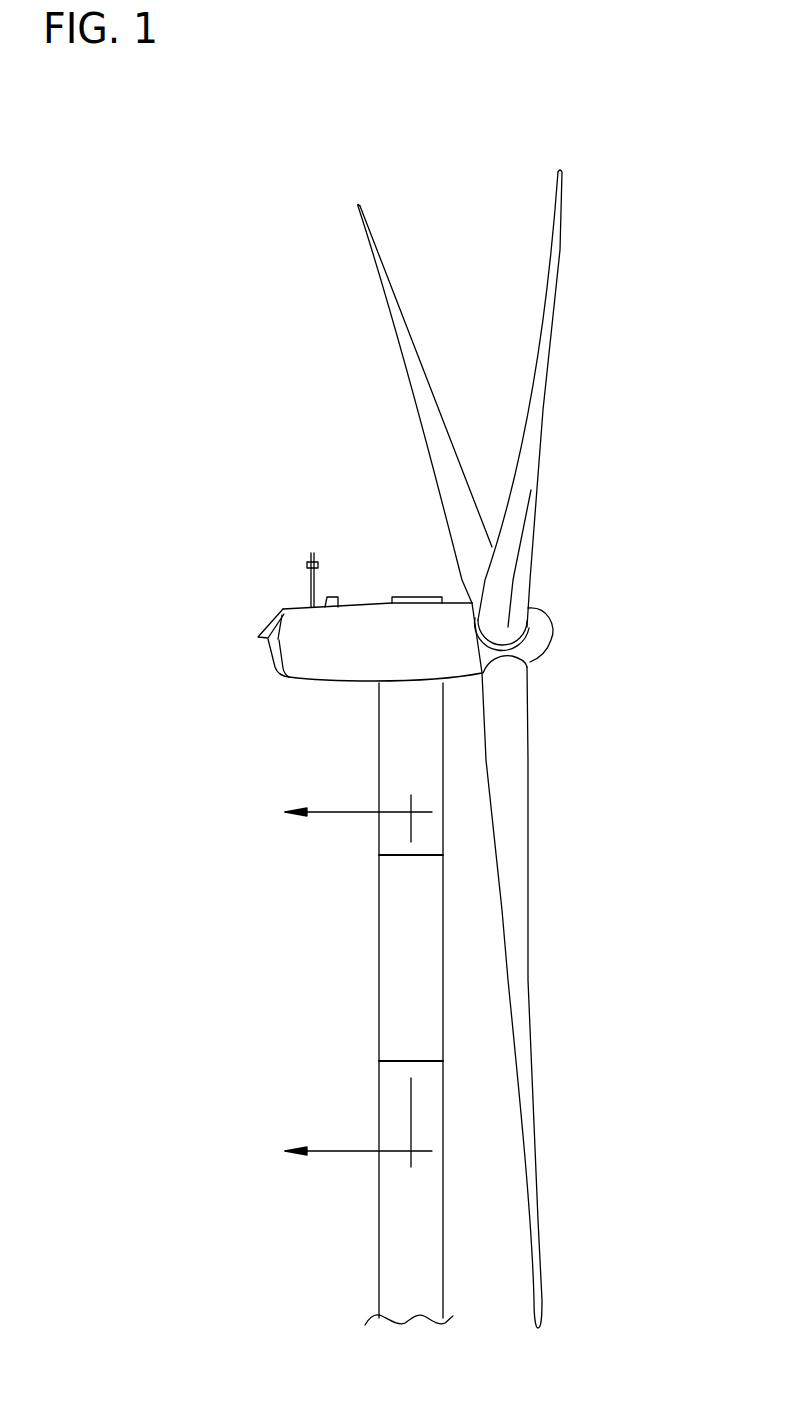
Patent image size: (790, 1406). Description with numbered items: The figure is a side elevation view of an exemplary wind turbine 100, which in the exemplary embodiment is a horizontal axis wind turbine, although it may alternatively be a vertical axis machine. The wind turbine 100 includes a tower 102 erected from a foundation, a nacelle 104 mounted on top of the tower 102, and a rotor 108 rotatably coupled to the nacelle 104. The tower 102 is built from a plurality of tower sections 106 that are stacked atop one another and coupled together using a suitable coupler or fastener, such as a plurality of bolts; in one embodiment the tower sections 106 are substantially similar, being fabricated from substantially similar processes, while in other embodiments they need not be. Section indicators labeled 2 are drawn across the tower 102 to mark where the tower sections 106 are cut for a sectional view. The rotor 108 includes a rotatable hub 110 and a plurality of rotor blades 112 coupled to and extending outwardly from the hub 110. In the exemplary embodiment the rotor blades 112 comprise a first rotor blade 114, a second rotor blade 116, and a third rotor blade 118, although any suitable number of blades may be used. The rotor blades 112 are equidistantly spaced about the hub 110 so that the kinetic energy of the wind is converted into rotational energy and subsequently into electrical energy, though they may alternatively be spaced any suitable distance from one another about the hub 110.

The wind turbine 100 is at (238, 185).
The tower 102 is at (180, 893).
The nacelle 104 is at (372, 597).
The tower sections 106 is at (379, 745).
The rotor 108 is at (577, 605).
The hub 110 is at (547, 650).
The rotor blades 112 is at (512, 250).
The first rotor blade 114 is at (545, 370).
The second rotor blade 116 is at (420, 360).
The third rotor blade 118 is at (528, 885).
The section line 2 is at (355, 979).